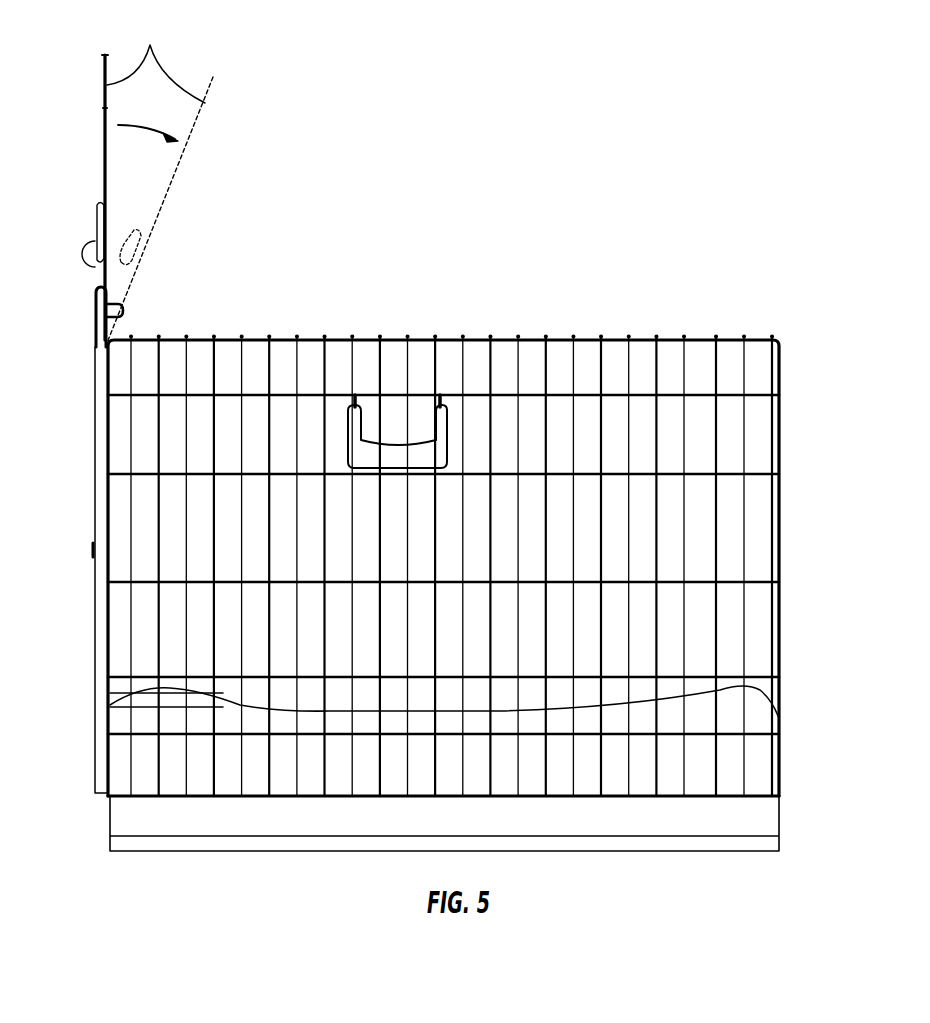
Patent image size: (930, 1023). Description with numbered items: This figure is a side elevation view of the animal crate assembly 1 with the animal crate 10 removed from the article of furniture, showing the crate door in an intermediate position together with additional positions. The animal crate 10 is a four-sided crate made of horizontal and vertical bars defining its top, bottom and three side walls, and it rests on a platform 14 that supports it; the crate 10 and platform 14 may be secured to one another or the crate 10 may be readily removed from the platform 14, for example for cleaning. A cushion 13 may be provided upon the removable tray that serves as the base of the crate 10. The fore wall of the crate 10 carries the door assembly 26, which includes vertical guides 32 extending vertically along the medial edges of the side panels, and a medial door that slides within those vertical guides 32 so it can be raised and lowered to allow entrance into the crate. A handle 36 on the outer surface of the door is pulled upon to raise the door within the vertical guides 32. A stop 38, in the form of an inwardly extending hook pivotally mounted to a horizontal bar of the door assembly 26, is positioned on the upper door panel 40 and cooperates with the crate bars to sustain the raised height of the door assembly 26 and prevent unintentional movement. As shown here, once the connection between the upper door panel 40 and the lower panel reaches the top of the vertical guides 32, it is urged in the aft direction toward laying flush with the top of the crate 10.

The animal crate assembly 1 is at (472, 271).
The animal crate 10 is at (780, 532).
The cushion 13 is at (730, 771).
The platform 14 is at (178, 845).
The door assembly 26 is at (105, 150).
The vertical guides 32 is at (100, 777).
The handle 36 is at (92, 548).
The stop 38 is at (92, 325).
The upper door panel 40 is at (150, 45).